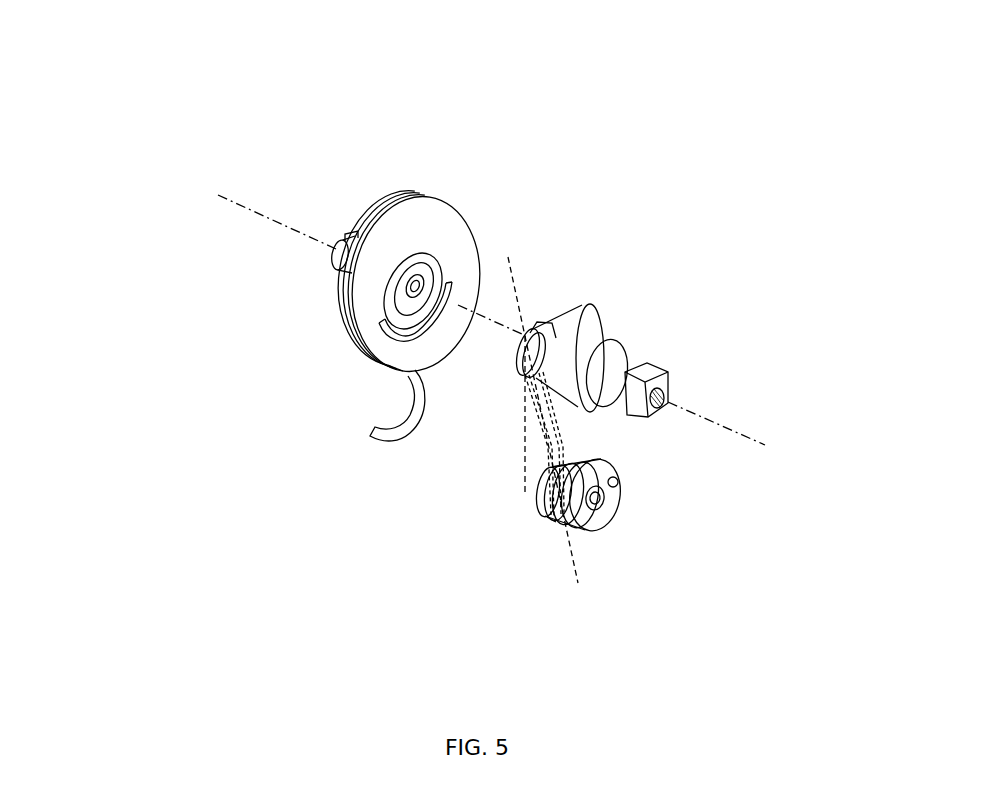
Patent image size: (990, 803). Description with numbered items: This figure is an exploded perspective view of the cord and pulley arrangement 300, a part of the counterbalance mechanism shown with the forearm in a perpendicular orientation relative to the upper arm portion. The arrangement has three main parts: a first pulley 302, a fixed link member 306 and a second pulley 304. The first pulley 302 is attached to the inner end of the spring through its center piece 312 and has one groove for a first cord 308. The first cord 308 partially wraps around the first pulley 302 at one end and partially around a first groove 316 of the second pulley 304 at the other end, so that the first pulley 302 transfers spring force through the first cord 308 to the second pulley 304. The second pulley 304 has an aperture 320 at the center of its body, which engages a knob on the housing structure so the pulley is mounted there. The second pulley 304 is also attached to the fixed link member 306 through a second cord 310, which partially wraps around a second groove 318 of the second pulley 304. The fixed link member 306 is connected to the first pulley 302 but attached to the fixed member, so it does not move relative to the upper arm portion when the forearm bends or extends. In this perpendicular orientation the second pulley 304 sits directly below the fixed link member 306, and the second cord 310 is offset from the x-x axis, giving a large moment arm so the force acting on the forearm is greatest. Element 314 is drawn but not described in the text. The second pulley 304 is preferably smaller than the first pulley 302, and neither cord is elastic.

The cord and pulley arrangement 300 is at (665, 192).
The first pulley 302 is at (453, 228).
The second pulley 304 is at (618, 496).
The fixed link member 306 is at (593, 320).
The first cord 308 is at (417, 398).
The second cord 310 is at (541, 457).
The center piece 312 is at (339, 259).
The coupling nut 314 is at (663, 383).
The first groove 316 is at (552, 518).
The second groove 318 is at (598, 460).
The aperture 320 is at (597, 500).